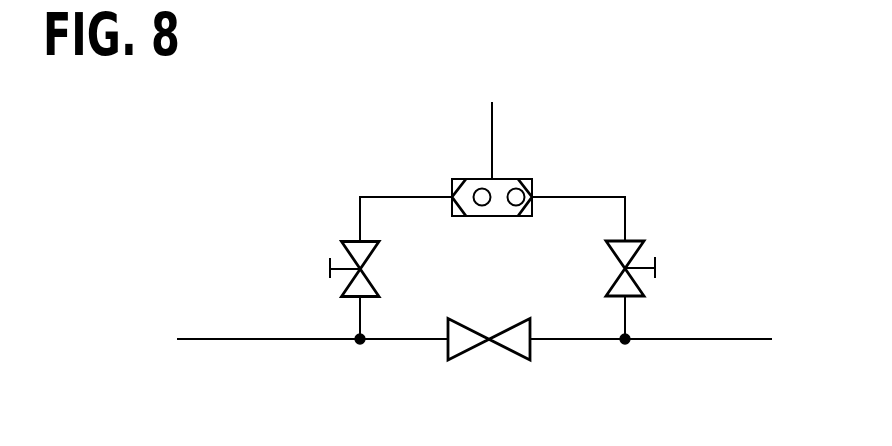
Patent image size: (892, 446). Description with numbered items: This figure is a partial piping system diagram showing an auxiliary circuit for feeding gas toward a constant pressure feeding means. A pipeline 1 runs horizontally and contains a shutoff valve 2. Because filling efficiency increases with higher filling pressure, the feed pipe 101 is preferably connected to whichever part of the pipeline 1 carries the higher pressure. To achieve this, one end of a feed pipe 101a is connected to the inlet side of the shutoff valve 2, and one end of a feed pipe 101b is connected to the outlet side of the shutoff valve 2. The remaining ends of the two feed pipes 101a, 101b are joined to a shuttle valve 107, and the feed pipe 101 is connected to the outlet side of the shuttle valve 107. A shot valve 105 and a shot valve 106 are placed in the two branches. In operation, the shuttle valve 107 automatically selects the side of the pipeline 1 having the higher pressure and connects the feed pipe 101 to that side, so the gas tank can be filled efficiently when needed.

The pipeline 1 is at (712, 340).
The shutoff valve 2 is at (533, 349).
The feed pipe 101 is at (492, 131).
The feed pipe 101a is at (360, 211).
The feed pipe 101b is at (617, 196).
The shot valve 105 is at (341, 297).
The shot valve 106 is at (647, 283).
The shuttle valve 107 is at (523, 178).